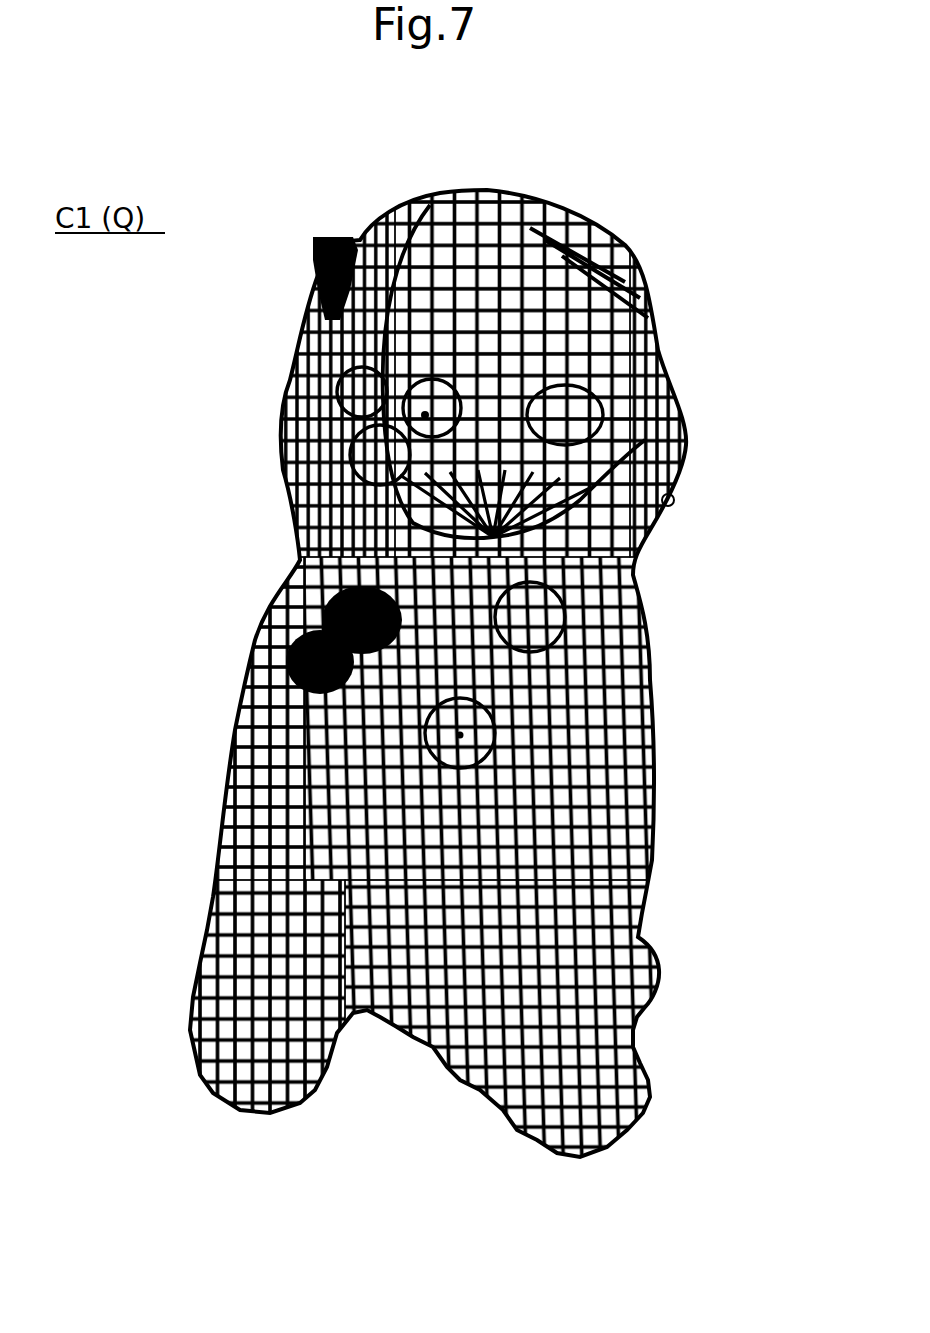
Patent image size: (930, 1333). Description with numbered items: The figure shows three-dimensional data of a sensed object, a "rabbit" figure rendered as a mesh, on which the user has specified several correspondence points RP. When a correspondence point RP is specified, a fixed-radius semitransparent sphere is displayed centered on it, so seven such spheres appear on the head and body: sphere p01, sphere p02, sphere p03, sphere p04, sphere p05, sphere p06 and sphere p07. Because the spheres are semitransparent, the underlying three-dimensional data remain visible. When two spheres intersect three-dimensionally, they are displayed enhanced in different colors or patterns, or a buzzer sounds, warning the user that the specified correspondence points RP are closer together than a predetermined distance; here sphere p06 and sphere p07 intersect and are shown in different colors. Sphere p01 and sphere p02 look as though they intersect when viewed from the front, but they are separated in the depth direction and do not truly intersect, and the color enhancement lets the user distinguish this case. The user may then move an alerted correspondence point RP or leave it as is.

The semitransparent sphere p01 is at (338, 378).
The semitransparent sphere p02 is at (338, 462).
The semitransparent sphere p03 is at (655, 430).
The correspondence point RP is at (673, 503).
The semitransparent sphere p04 is at (603, 622).
The semitransparent sphere p05 is at (547, 740).
The semitransparent sphere p06 is at (300, 597).
The semitransparent sphere p07 is at (292, 668).